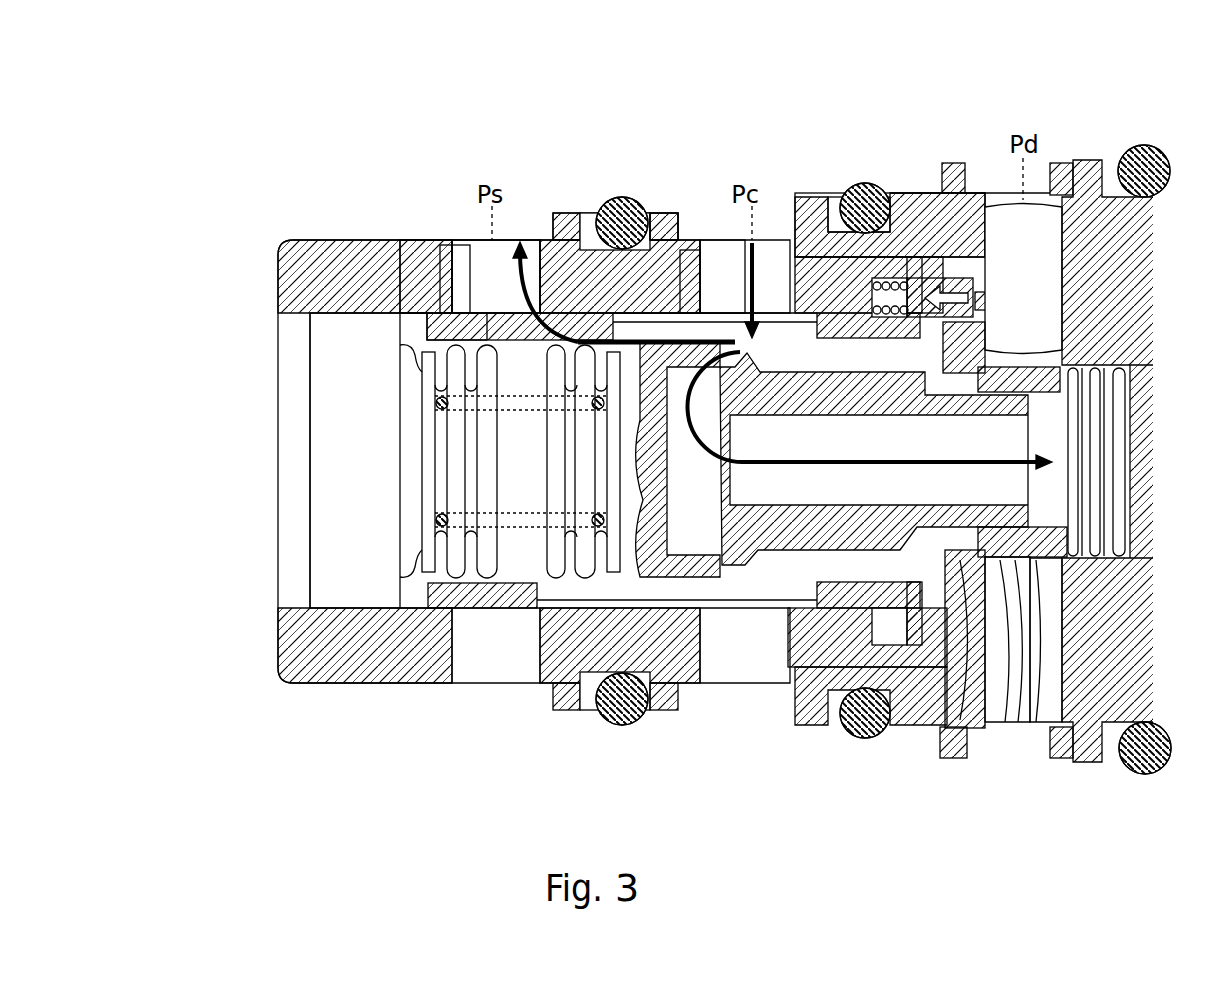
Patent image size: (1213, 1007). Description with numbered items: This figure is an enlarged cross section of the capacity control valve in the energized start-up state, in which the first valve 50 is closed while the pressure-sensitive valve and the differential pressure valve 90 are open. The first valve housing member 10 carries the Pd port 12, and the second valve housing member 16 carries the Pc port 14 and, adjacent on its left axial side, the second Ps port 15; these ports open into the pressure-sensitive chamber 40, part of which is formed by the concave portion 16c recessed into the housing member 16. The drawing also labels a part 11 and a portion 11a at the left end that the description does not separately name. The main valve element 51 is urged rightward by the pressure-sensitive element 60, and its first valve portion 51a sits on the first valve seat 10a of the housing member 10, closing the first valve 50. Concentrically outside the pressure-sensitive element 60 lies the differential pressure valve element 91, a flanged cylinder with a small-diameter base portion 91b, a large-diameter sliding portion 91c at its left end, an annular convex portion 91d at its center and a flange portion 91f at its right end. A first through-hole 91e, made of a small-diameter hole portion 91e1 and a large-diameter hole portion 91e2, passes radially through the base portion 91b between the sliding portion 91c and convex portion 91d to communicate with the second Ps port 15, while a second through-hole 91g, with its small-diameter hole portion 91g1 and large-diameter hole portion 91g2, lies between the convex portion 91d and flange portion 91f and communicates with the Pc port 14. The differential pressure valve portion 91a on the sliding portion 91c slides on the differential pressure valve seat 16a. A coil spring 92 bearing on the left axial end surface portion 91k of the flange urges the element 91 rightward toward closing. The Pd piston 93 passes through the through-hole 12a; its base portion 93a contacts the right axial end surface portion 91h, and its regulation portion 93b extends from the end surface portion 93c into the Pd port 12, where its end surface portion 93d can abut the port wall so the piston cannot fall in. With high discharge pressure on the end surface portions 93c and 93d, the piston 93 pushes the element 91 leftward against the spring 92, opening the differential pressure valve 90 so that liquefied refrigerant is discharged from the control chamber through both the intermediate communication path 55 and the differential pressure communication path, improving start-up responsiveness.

The first valve housing member 10 is at (895, 182).
The first valve seat 10a is at (1017, 556).
The valve housing end cap 11 is at (298, 452).
The housing protrusion 11a is at (405, 357).
The Pd port 12 is at (1065, 222).
The through-hole 12a is at (970, 280).
The Pc port 14 is at (790, 258).
The second Ps port 15 is at (450, 268).
The second valve housing member 16 is at (350, 228).
The differential pressure valve seat 16a is at (517, 248).
The concave portion 16c is at (830, 250).
The pressure-sensitive chamber 40 is at (852, 572).
The first valve 50 is at (1025, 829).
The main valve element 51 is at (1037, 582).
The first valve portion 51a is at (952, 760).
The intermediate communication path 55 is at (790, 487).
The pressure-sensitive element 60 is at (494, 590).
The differential pressure valve 90 is at (505, 82).
The differential pressure valve element 91 is at (430, 604).
The differential pressure valve portion 91a is at (467, 248).
The base portion 91b is at (700, 290).
The sliding portion 91c is at (457, 248).
The annular convex portion 91d is at (620, 197).
The first through-hole 91e is at (483, 33).
The small-diameter hole portion 91e1 is at (545, 248).
The large-diameter hole portion 91e2 is at (583, 248).
The flange portion 91f is at (913, 270).
The second through-hole 91g is at (623, 33).
The small-diameter hole portion 91g1 is at (726, 245).
The large-diameter hole portion 91g2 is at (665, 245).
The right axial end surface portion 91h is at (912, 322).
The left axial end surface portion 91k is at (862, 326).
The coil spring 92 is at (853, 192).
The Pd piston 93 is at (900, 320).
The base portion 93a is at (945, 320).
The regulation portion 93b is at (987, 248).
The end surface portion 93c is at (978, 312).
The end surface portion 93d is at (1052, 285).